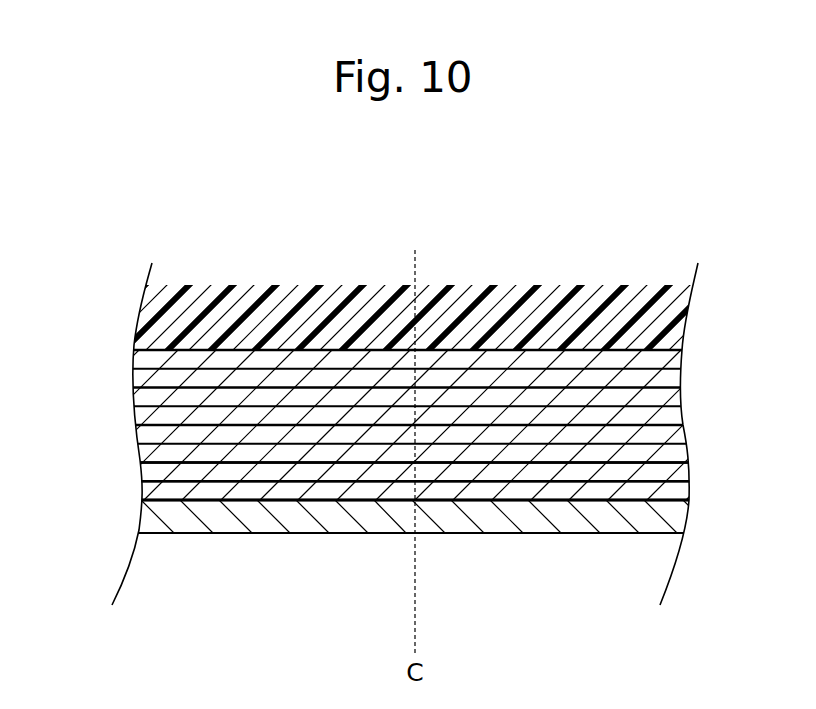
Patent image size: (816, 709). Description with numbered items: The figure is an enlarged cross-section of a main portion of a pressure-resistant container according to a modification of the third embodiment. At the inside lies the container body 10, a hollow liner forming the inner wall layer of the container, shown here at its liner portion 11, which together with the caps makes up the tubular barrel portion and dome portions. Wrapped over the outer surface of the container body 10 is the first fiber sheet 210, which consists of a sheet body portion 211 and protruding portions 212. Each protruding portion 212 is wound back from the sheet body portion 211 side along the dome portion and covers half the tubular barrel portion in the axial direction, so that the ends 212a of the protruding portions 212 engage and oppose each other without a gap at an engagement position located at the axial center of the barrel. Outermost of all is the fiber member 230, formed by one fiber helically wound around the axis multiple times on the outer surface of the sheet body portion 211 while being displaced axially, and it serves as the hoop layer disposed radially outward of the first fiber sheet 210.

The container body 10 is at (407, 279).
The liner portion 11 is at (308, 333).
The first fiber sheet 210 is at (693, 351).
The sheet body portion 211 is at (323, 492).
The protruding portion 212 is at (222, 472).
The end of protruding portion 212a is at (424, 481).
The fiber member 230 is at (157, 513).